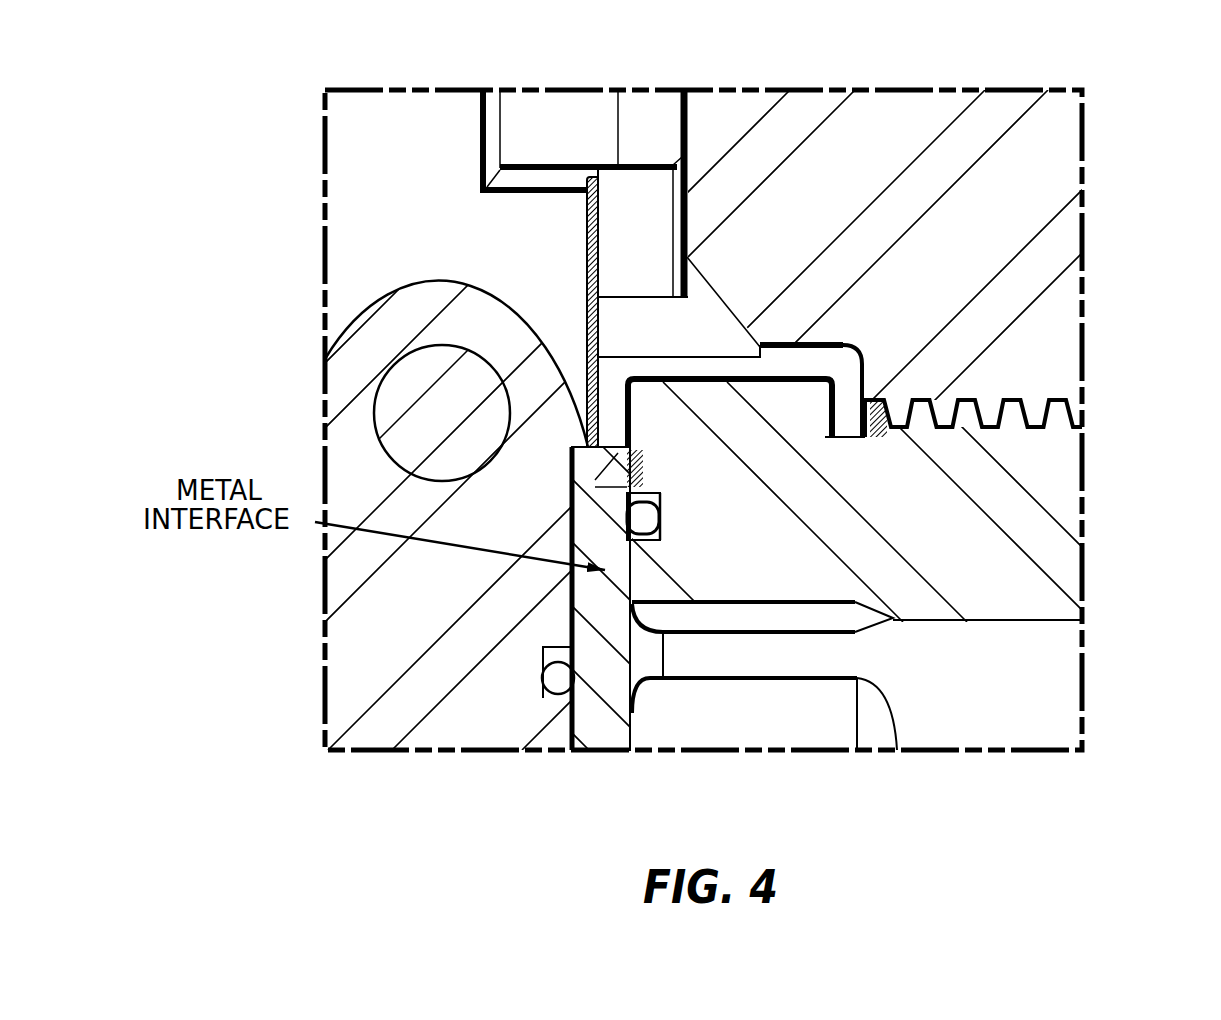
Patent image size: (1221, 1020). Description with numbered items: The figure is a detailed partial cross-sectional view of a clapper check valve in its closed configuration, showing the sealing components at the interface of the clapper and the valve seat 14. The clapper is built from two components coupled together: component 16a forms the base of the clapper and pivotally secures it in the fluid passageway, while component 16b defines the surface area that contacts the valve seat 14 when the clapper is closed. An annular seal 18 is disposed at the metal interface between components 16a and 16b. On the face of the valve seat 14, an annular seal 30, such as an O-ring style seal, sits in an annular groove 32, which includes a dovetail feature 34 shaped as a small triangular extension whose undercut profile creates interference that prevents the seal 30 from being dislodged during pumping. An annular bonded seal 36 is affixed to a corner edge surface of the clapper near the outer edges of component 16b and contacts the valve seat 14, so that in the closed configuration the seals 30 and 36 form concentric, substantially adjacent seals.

The valve seat 14 is at (712, 362).
The clapper component 16a is at (368, 618).
The clapper component 16b is at (590, 444).
The annular seal 18 is at (542, 697).
The annular seal 30 is at (664, 517).
The annular groove 32 is at (665, 528).
The dovetail feature 34 is at (664, 502).
The annular bonded seal 36 is at (624, 447).